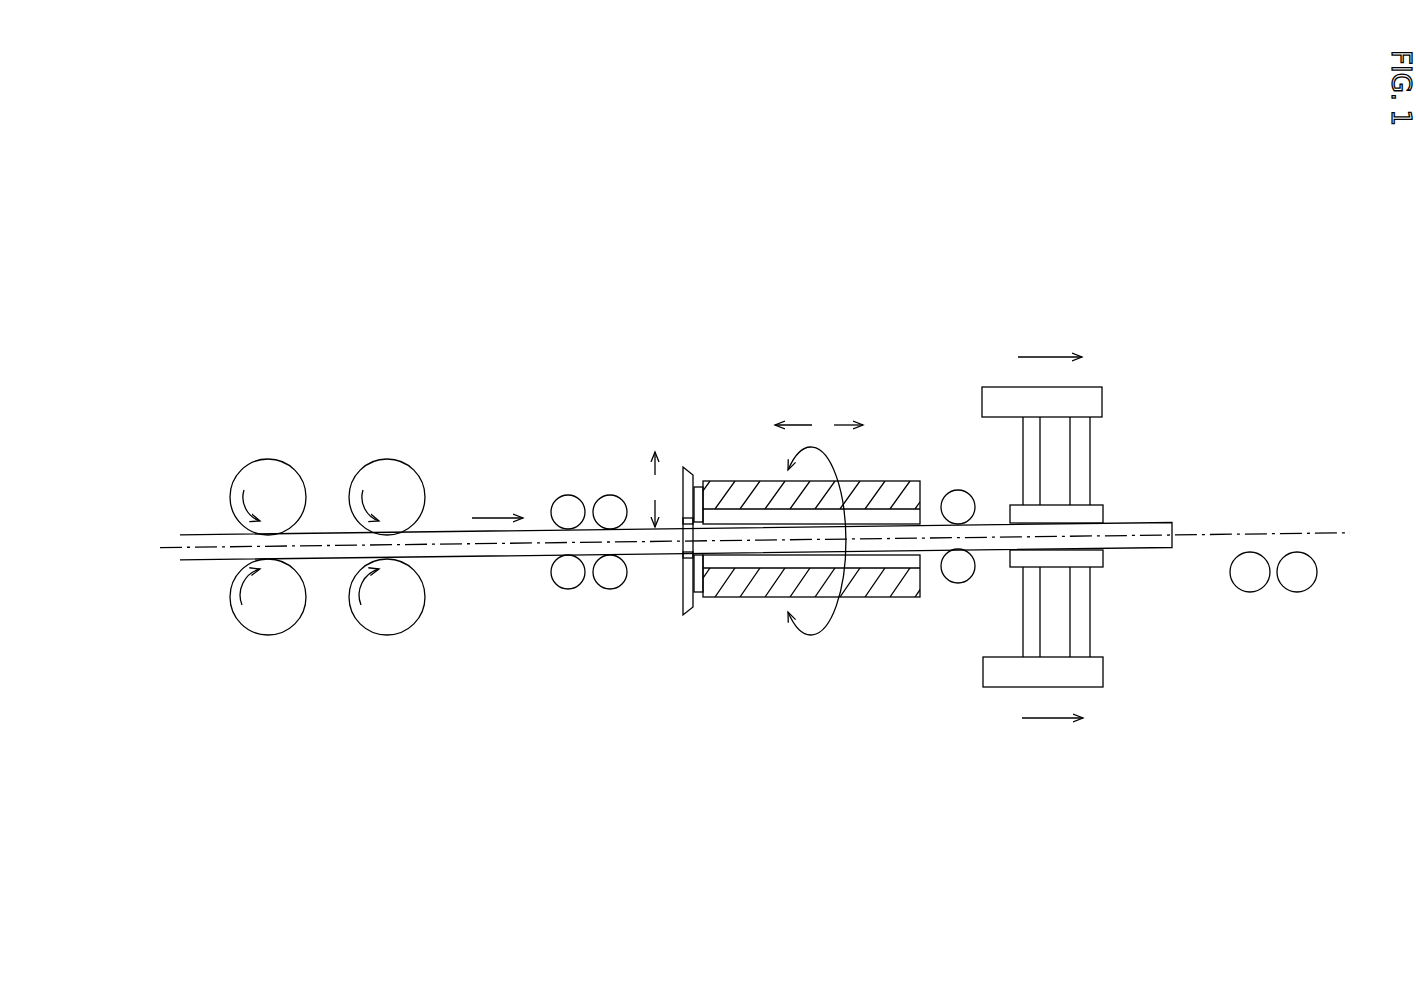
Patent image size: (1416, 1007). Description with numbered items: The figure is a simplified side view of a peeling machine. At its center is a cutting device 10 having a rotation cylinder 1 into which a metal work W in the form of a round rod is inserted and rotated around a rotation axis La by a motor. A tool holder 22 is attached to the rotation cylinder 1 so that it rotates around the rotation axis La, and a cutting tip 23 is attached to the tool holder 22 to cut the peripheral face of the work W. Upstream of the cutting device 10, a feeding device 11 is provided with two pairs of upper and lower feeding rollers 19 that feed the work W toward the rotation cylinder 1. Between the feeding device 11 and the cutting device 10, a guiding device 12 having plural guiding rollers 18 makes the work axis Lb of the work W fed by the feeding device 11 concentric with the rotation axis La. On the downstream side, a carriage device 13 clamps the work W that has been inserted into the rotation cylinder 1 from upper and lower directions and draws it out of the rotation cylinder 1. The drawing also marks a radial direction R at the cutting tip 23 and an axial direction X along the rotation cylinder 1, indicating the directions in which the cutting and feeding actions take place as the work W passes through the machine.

The rotation cylinder 1 is at (722, 475).
The cutting device 10 is at (764, 492).
The feeding device 11 is at (327, 512).
The guiding device 12 is at (572, 518).
The carriage device 13 is at (1132, 395).
The guiding rollers 18 is at (558, 493).
The feeding rollers 19 is at (290, 460).
The tool holder 22 is at (682, 467).
The cutting tip 23 is at (680, 527).
The work W is at (737, 527).
The rotation axis La is at (748, 540).
The work axis Lb is at (485, 543).
The radial direction R is at (657, 489).
The axial direction X is at (819, 425).